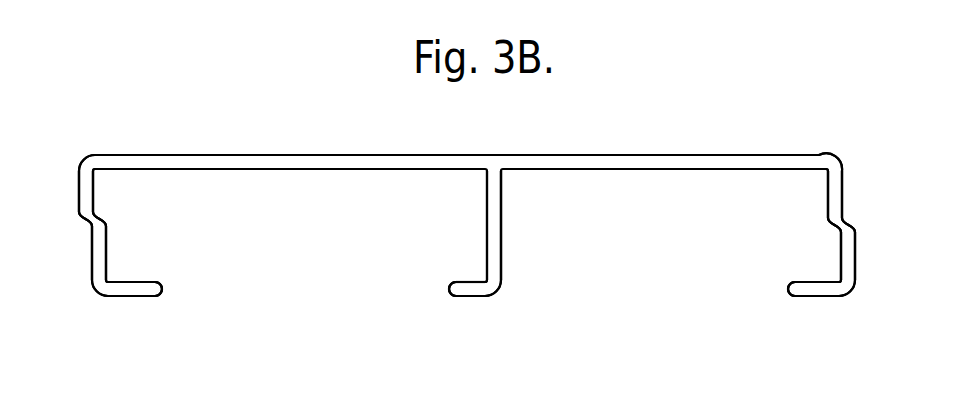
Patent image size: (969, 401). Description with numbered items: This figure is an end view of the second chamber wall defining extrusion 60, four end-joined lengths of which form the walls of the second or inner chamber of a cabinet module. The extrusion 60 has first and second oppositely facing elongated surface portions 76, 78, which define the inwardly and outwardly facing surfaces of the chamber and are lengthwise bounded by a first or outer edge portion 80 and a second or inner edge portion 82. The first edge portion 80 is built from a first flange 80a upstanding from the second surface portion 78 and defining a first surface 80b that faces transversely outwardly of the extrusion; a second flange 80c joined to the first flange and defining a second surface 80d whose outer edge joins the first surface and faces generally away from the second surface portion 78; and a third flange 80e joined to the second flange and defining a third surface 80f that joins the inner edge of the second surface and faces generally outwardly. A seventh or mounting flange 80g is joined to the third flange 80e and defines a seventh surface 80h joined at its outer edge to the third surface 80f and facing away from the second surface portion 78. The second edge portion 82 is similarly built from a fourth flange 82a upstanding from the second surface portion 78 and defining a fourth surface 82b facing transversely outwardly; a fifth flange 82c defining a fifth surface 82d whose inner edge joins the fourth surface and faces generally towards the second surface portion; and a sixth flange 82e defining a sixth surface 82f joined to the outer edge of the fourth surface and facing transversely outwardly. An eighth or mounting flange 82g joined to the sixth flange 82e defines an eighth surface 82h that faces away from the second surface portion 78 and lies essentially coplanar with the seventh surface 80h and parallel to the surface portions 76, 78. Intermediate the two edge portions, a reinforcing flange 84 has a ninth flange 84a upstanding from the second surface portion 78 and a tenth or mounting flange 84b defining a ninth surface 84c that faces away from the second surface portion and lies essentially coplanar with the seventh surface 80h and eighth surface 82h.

The second chamber wall defining extrusion 60 is at (303, 120).
The first surface portion 76 is at (594, 154).
The second surface portion 78 is at (603, 170).
The first edge portion 80 is at (95, 133).
The first flange 80a is at (86, 188).
The first surface 80b is at (79, 190).
The second flange 80c is at (100, 206).
The second surface 80d is at (86, 222).
The third flange 80e is at (96, 245).
The third surface 80f is at (92, 252).
The seventh mounting flange 80g is at (161, 290).
The seventh surface 80h is at (127, 298).
The second edge portion 82 is at (832, 133).
The fourth flange 82a is at (833, 186).
The fourth surface 82b is at (843, 186).
The fifth flange 82c is at (840, 230).
The fifth surface 82d is at (847, 224).
The sixth flange 82e is at (847, 258).
The sixth surface 82f is at (857, 245).
The eighth mounting flange 82g is at (790, 287).
The eighth surface 82h is at (803, 297).
The reinforcing flange 84 is at (439, 230).
The ninth flange 84a is at (497, 252).
The tenth mounting flange 84b is at (465, 278).
The ninth surface 84c is at (455, 298).